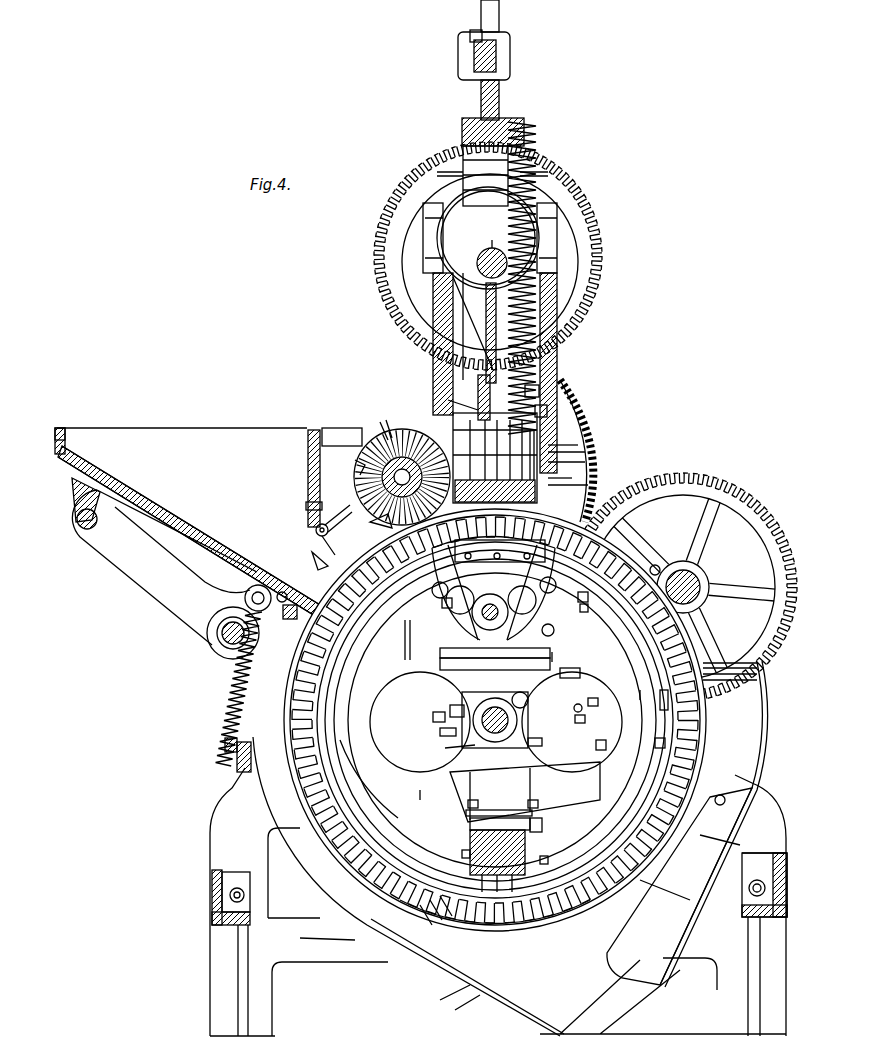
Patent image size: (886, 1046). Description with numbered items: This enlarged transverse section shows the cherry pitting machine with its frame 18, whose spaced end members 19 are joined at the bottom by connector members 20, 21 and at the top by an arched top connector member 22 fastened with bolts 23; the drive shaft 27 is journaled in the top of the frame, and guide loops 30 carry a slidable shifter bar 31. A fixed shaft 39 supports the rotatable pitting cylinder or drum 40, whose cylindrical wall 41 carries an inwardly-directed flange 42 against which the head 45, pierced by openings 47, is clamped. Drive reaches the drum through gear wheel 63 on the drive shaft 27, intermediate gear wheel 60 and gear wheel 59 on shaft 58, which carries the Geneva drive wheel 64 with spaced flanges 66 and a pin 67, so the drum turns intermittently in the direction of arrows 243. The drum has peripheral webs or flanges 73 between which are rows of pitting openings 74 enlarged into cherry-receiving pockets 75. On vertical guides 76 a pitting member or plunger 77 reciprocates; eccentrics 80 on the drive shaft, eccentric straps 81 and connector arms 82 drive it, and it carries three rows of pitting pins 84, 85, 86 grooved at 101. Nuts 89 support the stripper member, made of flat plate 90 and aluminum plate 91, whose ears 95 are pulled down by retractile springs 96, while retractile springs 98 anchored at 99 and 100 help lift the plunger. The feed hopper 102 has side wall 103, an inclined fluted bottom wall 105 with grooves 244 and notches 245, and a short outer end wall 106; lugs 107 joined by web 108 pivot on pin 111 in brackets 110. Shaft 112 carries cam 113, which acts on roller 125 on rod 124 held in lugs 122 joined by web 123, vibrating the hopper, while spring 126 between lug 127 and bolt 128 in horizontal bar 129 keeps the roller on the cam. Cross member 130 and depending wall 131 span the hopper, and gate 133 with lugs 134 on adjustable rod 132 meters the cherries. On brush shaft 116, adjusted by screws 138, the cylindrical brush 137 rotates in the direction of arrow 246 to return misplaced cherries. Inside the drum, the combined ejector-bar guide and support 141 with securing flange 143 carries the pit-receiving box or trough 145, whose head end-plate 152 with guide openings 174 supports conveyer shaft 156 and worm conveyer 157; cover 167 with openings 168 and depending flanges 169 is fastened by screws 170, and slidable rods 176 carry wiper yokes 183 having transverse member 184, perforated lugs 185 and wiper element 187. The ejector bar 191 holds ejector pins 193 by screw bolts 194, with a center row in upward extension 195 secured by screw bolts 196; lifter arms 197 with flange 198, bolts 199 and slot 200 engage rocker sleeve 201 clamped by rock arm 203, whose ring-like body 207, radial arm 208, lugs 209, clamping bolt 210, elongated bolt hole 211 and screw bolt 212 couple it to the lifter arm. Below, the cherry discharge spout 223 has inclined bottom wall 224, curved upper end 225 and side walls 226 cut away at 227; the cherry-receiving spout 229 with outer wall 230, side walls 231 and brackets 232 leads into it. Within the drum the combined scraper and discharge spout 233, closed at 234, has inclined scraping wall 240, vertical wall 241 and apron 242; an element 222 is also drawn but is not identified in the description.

The frame 18 is at (210, 845).
The end members 19 is at (322, 962).
The connector member 20 is at (212, 915).
The connector member 21 is at (788, 915).
The arched top connector member 22 is at (481, 97).
The bolts 23 is at (425, 208).
The drive shaft 27 is at (488, 256).
The guide loops 30 is at (466, 57).
The shifter bar 31 is at (505, 57).
The shaft or cylindrical supporting rod 39 is at (520, 720).
The pitting cylinder or drum 40 is at (478, 933).
The cylindrical wall 41 is at (398, 815).
The inwardly-directed flange 42 is at (345, 772).
The head 45 is at (362, 668).
The openings 47 is at (552, 652).
The shaft 58 is at (702, 578).
The gear wheel 59 is at (718, 488).
The gear wheel 60 is at (582, 464).
The gear wheel 63 is at (575, 338).
The drive wheel 64 is at (712, 606).
The outstanding flanges 66 is at (684, 560).
The pin 67 is at (652, 566).
The peripheral webs or flanges 73 is at (420, 920).
The pitting openings 74 is at (308, 712).
The cherry-receiving pockets 75 is at (290, 706).
The vertical guides 76 is at (532, 475).
The pitting member or plunger 77 is at (570, 440).
The eccentrics 80 is at (437, 236).
The eccentric straps 81 is at (446, 287).
The connector arms 82 is at (472, 316).
The pitting pins 84 is at (462, 450).
The pitting pins 85 is at (480, 412).
The pitting pins 86 is at (582, 447).
The nuts 89 is at (531, 393).
The flat plate 90 is at (547, 478).
The aluminum plate 91 is at (592, 482).
The ears 95 is at (462, 480).
The retractile springs 96 is at (562, 506).
The retractile springs 98 is at (530, 302).
The spring fastening 99 is at (541, 410).
The spring fastening 100 is at (522, 120).
The grooves 101 is at (592, 454).
The feed hopper 102 is at (62, 450).
The side wall 103 is at (190, 420).
The inclined bottom wall 105 is at (218, 534).
The short outer end wall 106 is at (70, 428).
The lugs 107 is at (175, 480).
The web 108 is at (80, 500).
The brackets 110 is at (165, 600).
The pivot pin 111 is at (85, 524).
The shaft 112 is at (228, 642).
The cam 113 is at (212, 632).
The brush shaft 116 is at (372, 482).
The lugs 122 is at (262, 586).
The web 123 is at (250, 590).
The shaft or cylindrical rod 124 is at (295, 566).
The roller 125 is at (232, 610).
The retractile spring 126 is at (245, 690).
The lug 127 is at (290, 608).
The bolt 128 is at (225, 744).
The horizontal bar 129 is at (240, 760).
The cross member 130 is at (345, 430).
The transverse depending wall 131 is at (308, 477).
The rotatably adjustable rod 132 is at (310, 507).
The gate 133 is at (356, 540).
The lugs 134 is at (316, 528).
The cylindrical brush 137 is at (382, 516).
The adjusting screws 138 is at (388, 422).
The combined ejector-bar guide and support 141 is at (440, 708).
The securing flange 143 is at (575, 664).
The pit-receiving box or trough 145 is at (462, 612).
The head end-plate 152 is at (557, 622).
The conveyer shaft 156 is at (460, 650).
The worm conveyer 157 is at (445, 660).
The cover 167 is at (580, 592).
The openings 168 is at (490, 594).
The depending flanges 169 is at (442, 602).
The screws 170 is at (432, 592).
The guide openings 174 is at (588, 604).
The slidable rods 176 is at (385, 622).
The wiper yokes 183 is at (463, 598).
The transverse member 184 is at (519, 598).
The depending perforated lugs 185 is at (408, 626).
The wiper element 187 is at (668, 518).
The ejector bar 191 is at (475, 872).
The ejector pins 193 is at (545, 880).
The screw bolts 194 is at (462, 856).
The upward extension 195 is at (470, 826).
The screw bolts 196 is at (560, 830).
The lifter arms 197 is at (542, 742).
The flange 198 is at (466, 814).
The bolts 199 is at (468, 805).
The upwardly-opening slot 200 is at (585, 710).
The rocker sleeve 201 is at (450, 712).
The rock arm 203 is at (593, 718).
The ring-like body portion 207 is at (433, 715).
The radial arm 208 is at (594, 704).
The lugs 209 is at (445, 748).
The clamping bolt 210 is at (440, 730).
The elongated bolt hole 211 is at (512, 694).
The screw bolt 212 is at (606, 693).
The rail 222 is at (475, 518).
The cherry discharge spout 223 is at (600, 995).
The straight inclined bottom wall 224 is at (505, 1020).
The curved upper end 225 is at (270, 818).
The side walls 226 is at (470, 1005).
The cut-away portion 227 is at (372, 940).
The cherry-receiving spout 229 is at (690, 917).
The outer wall 230 is at (700, 878).
The side walls 231 is at (748, 780).
The brackets 232 is at (784, 857).
The combined scraper and discharge spout 233 is at (660, 812).
The closed inner end 234 is at (662, 736).
The inclined wall 240 is at (672, 850).
The vertical wall 241 is at (575, 782).
The apron 242 is at (594, 747).
The arrows 243 is at (662, 712).
The longitudinal grooves 244 is at (205, 525).
The notches 245 is at (320, 568).
The arrow 246 is at (360, 462).